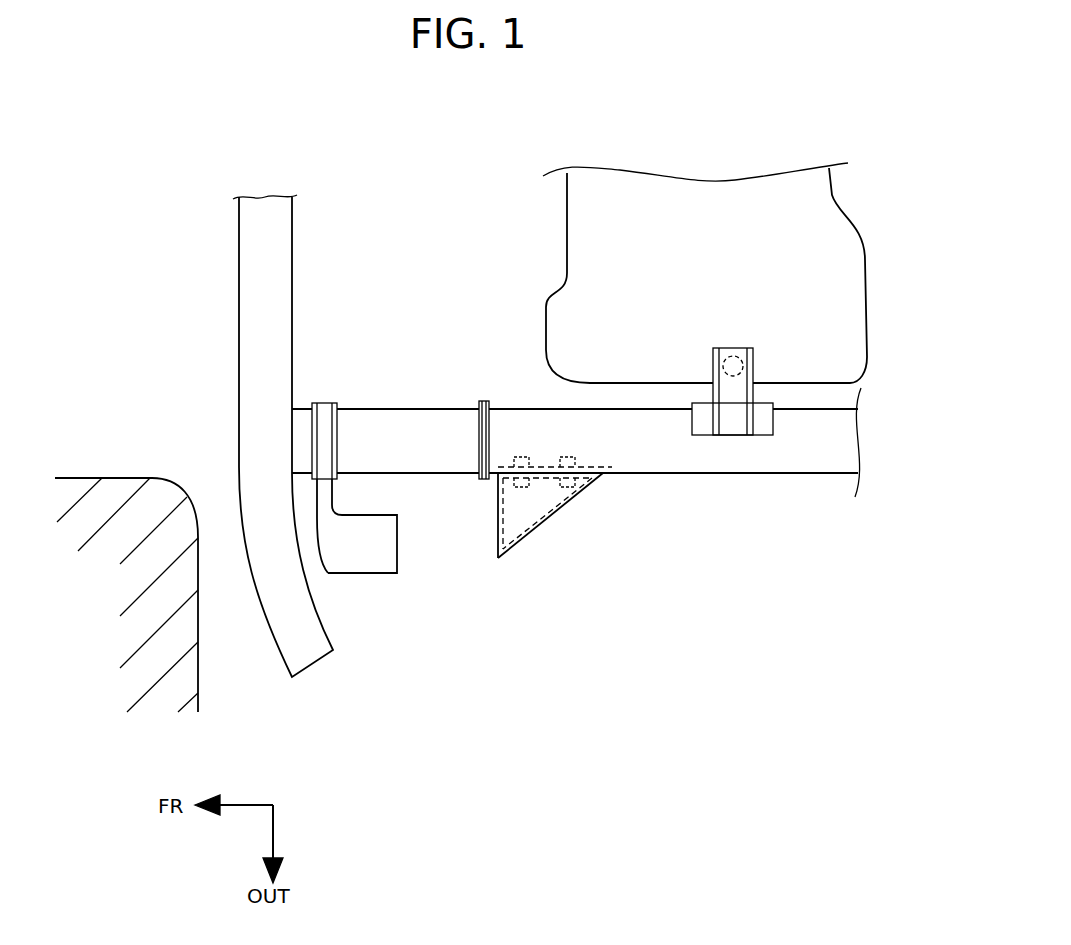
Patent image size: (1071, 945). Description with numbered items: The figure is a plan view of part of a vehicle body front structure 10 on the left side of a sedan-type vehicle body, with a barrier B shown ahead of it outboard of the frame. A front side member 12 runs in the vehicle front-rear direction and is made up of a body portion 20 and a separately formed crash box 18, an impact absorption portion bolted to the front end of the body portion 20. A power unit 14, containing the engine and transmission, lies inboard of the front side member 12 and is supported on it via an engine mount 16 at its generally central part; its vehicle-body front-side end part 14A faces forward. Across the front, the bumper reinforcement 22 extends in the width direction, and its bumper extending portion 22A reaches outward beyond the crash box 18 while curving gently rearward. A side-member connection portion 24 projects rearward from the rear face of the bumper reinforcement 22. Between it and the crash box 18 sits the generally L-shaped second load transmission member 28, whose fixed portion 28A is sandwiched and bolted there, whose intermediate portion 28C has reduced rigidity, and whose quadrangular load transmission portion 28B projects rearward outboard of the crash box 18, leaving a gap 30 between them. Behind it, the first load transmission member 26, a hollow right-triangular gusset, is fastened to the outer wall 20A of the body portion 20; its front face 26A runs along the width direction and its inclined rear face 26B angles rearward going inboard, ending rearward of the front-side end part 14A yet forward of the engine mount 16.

The vehicle body front structure 10 is at (500, 643).
The front side member 12 is at (525, 458).
The power unit 14 is at (566, 200).
The vehicle-body front-side end part of the power unit 14A is at (545, 322).
The engine mount 16 is at (733, 347).
The crash box 18 is at (396, 408).
The body portion 20 is at (784, 474).
The outer wall 20A is at (538, 464).
The bumper reinforcement 22 is at (293, 279).
The bumper extending portion 22A is at (258, 618).
The side-member connection portion 24 is at (300, 440).
The first load transmission member 26 is at (536, 541).
The front face 26A is at (493, 522).
The rear face 26B is at (537, 530).
The second load transmission member 28 is at (302, 504).
The fixed portion 28A is at (324, 402).
The load transmission portion 28B is at (357, 575).
The intermediate portion 28C is at (318, 497).
The gap 30 is at (366, 497).
The barrier B is at (113, 478).